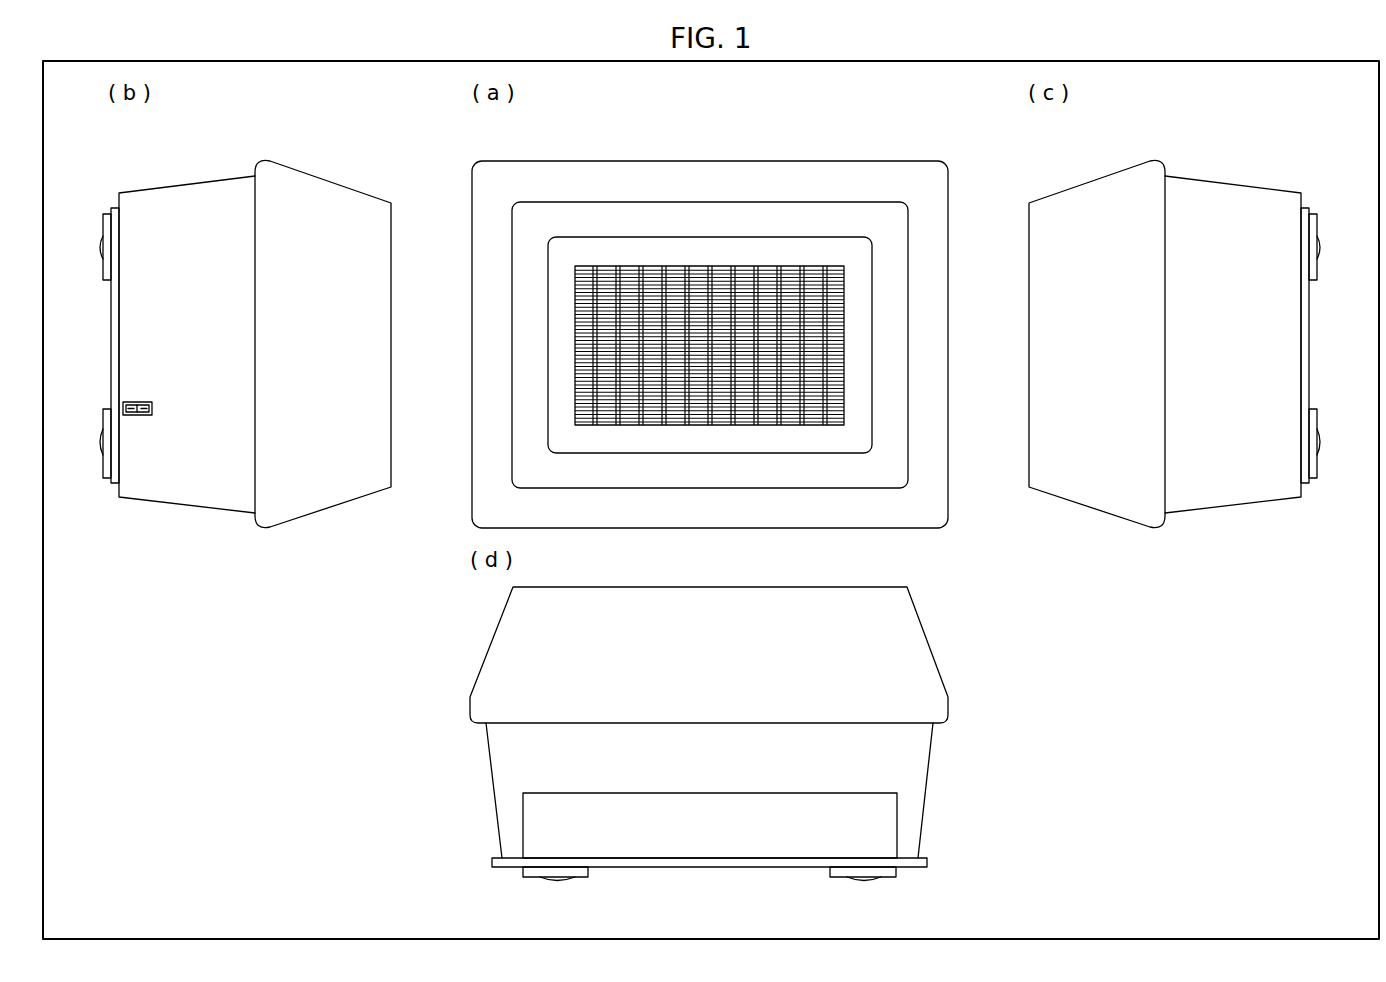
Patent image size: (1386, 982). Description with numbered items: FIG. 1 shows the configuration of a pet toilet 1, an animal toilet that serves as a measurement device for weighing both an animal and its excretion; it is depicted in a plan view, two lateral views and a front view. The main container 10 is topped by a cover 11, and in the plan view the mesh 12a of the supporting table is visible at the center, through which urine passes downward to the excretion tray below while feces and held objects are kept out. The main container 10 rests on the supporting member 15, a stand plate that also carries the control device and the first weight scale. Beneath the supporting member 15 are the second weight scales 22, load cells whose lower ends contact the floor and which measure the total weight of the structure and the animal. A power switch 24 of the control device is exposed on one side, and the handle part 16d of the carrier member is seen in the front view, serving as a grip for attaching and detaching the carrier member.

The pet toilet 1 is at (937, 144).
The main container 10 is at (207, 184).
The cover 11 is at (580, 175).
The mesh 12a is at (698, 302).
The supporting member 15 is at (492, 863).
The handle part 16d is at (710, 840).
The second weight scales 22 is at (105, 213).
The power switch 24 is at (123, 407).